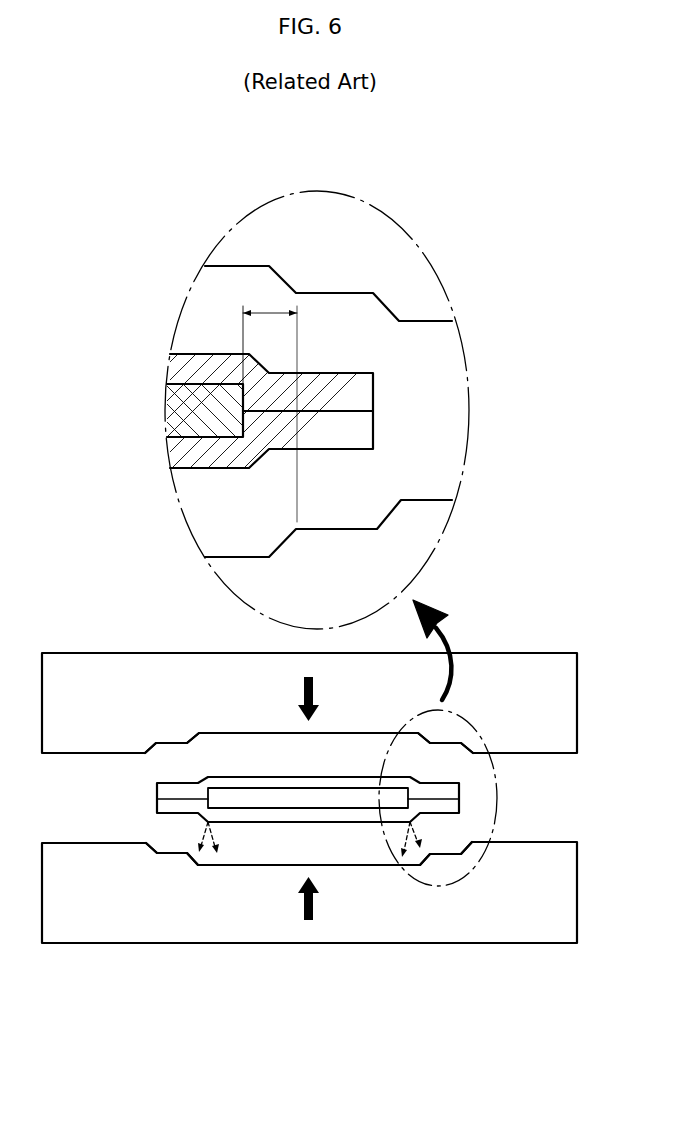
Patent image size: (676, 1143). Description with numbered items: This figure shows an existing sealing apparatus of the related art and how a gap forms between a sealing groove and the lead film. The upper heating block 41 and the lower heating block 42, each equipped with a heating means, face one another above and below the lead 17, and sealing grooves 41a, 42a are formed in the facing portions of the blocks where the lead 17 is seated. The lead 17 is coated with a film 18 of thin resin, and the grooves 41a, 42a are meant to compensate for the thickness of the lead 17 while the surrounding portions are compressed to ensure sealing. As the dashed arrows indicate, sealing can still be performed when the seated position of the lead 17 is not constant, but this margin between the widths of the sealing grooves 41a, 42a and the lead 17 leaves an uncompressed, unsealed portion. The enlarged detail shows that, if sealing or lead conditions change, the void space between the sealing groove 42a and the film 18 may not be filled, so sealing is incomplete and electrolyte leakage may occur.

The lead 17 is at (175, 410).
The film 18 is at (175, 364).
The upper heating block 41 is at (435, 300).
The sealing groove 41a is at (222, 731).
The lower heating block 42 is at (435, 521).
The sealing groove 42a is at (222, 866).